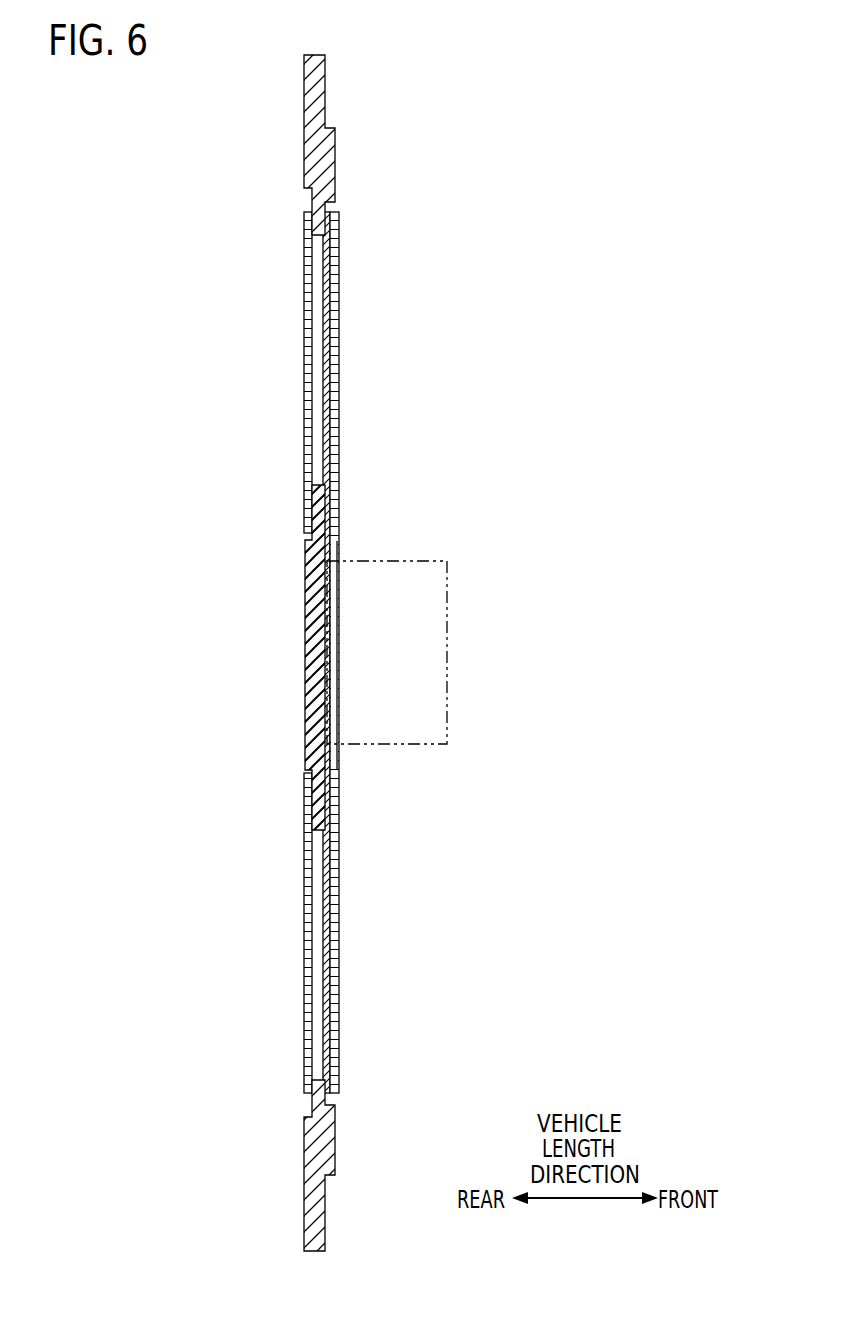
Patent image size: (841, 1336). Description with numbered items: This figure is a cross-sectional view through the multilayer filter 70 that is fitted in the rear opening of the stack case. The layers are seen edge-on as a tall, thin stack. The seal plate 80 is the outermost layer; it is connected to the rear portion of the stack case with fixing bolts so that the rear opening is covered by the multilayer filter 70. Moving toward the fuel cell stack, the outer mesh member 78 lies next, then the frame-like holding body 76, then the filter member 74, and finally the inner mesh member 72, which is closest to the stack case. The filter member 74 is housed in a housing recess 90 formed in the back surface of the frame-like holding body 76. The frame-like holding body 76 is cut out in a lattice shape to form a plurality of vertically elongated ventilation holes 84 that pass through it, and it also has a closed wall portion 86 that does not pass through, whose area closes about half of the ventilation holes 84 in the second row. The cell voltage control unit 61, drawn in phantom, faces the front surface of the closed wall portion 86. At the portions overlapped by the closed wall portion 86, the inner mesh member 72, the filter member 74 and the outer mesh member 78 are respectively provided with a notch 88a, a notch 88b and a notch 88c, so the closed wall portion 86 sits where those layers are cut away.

The multilayer filter 70 is at (331, 141).
The seal plate 80 is at (313, 134).
The outer mesh member 78 is at (312, 240).
The filter member 74 is at (327, 277).
The inner mesh member 72 is at (333, 331).
The ventilation hole 84 is at (316, 410).
The notch 88c is at (306, 533).
The notch 88b is at (330, 547).
The closed wall portion 86 is at (322, 657).
The cell voltage control unit 61 is at (417, 652).
The notch 88a is at (335, 775).
The housing recess 90 is at (336, 1098).
The frame-like holding body 76 is at (332, 1158).